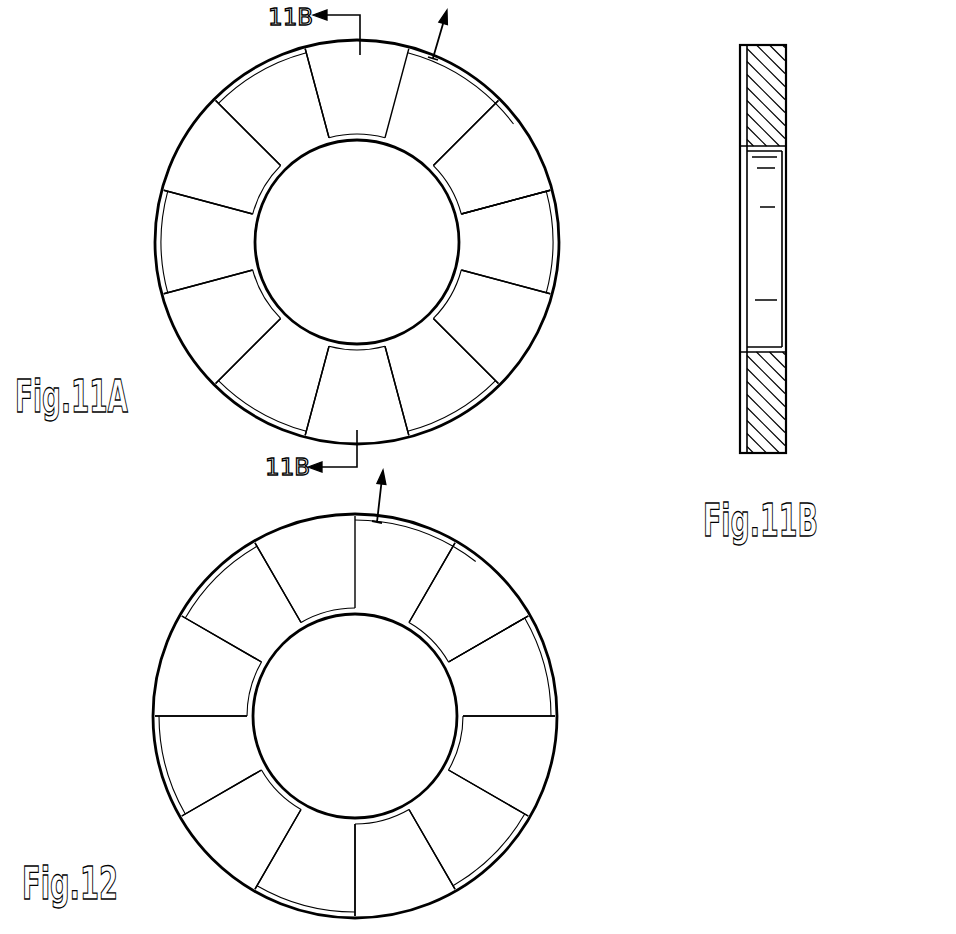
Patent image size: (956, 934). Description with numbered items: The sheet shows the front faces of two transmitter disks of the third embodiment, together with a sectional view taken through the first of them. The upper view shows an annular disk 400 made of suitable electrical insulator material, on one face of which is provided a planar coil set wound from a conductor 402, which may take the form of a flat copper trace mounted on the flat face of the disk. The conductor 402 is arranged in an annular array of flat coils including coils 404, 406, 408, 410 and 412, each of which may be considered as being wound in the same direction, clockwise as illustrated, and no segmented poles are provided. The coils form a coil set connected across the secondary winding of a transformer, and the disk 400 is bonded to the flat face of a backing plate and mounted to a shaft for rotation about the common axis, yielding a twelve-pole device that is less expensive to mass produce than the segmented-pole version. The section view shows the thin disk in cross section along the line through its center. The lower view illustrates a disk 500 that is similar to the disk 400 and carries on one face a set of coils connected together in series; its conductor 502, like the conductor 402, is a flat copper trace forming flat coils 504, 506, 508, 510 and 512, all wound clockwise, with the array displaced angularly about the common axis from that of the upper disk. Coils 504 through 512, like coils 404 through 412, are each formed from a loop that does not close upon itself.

In FIG. 11A, the annular disk 400 is at (552, 163).
In FIG. 11A, the conductor 402 is at (516, 118).
In FIG. 11A, the coil 404 is at (520, 234).
In FIG. 11A, the coil 406 is at (443, 393).
In FIG. 11A, the coil 408 is at (283, 380).
In FIG. 11A, the coil 410 is at (185, 238).
In FIG. 11A, the coil 412 is at (267, 100).
In FIG. 12, the disk 500 is at (516, 587).
In FIG. 12, the conductor 502 is at (475, 558).
In FIG. 12, the coil 504 is at (517, 678).
In FIG. 12, the coil 506 is at (475, 838).
In FIG. 12, the coil 508 is at (312, 858).
In FIG. 12, the coil 510 is at (185, 747).
In FIG. 12, the coil 512 is at (242, 588).